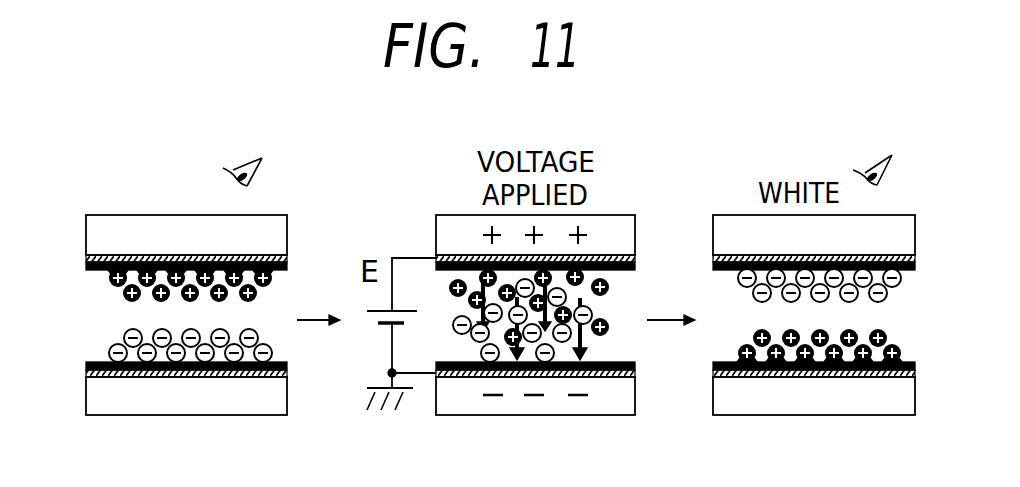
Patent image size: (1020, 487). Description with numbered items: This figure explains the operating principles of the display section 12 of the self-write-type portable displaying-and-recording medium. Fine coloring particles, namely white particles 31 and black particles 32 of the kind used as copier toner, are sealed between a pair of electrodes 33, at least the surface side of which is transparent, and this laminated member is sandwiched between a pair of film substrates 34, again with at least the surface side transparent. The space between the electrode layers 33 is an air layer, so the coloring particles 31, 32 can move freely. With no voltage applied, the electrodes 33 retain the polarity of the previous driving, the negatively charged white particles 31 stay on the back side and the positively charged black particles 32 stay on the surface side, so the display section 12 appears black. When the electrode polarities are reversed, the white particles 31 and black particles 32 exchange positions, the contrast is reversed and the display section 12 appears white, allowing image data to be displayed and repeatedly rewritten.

The display section 12 is at (297, 207).
The white particles 31 is at (114, 347).
The black particles 32 is at (112, 281).
The electrodes 33 is at (86, 254).
The film substrates 34 is at (287, 232).